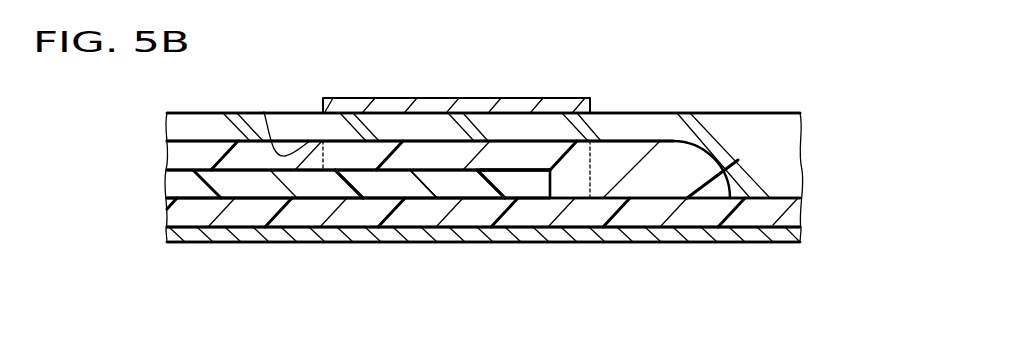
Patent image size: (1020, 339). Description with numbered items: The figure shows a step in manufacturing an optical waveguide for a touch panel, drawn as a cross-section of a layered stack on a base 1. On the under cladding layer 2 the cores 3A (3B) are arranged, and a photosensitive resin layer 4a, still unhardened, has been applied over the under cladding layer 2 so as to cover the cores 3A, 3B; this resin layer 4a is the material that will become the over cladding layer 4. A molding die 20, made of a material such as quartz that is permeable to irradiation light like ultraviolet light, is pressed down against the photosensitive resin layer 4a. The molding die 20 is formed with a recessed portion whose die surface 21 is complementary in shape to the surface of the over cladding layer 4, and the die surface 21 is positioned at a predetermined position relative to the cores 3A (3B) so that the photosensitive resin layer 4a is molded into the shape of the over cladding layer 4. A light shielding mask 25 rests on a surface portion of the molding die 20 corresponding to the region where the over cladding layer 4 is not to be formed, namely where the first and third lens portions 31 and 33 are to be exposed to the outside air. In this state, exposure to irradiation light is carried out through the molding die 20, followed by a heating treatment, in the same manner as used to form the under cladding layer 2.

The base layer 1 is at (173, 235).
The under cladding layer 2 is at (163, 210).
The core 3A is at (182, 183).
The core 3B is at (283, 170).
The over cladding layer 4 is at (350, 135).
The photosensitive resin layer 4a is at (172, 154).
The molding die 20 is at (745, 127).
The die surface 21 is at (264, 112).
The light shielding mask 25 is at (527, 105).
The first lens portion 31 is at (445, 182).
The third lens portion 33 is at (470, 127).